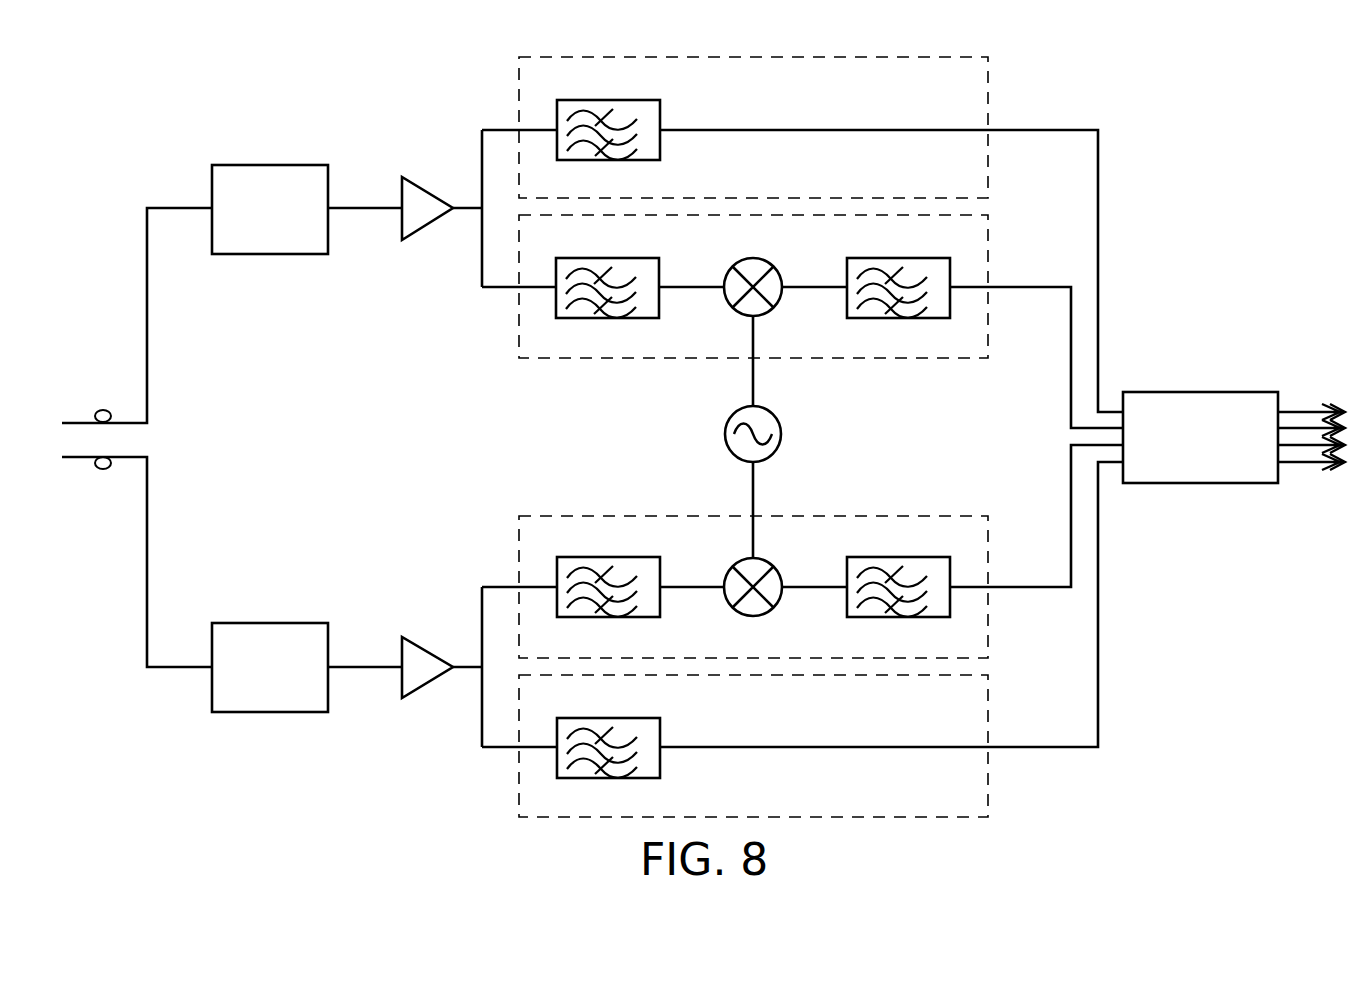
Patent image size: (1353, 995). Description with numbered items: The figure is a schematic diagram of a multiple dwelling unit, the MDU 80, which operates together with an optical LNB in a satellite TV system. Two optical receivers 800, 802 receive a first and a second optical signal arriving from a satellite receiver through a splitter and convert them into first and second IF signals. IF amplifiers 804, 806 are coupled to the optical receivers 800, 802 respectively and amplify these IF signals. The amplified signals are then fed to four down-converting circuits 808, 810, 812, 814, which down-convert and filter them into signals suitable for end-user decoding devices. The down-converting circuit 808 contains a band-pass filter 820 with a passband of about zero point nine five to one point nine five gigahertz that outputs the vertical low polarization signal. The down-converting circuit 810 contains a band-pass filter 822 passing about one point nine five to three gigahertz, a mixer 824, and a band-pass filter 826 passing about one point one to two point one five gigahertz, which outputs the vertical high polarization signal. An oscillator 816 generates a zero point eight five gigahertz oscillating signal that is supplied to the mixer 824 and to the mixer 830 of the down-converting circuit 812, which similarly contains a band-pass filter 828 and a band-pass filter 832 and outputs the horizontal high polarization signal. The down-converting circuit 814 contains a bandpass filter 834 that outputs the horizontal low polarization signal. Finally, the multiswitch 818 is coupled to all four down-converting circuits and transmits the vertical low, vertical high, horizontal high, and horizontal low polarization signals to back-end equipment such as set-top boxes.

The MDU 80 is at (1160, 99).
The optical receiver 800 is at (272, 165).
The optical receiver 802 is at (272, 623).
The IF amplifier 804 is at (430, 192).
The IF amplifier 806 is at (430, 651).
The down-converting circuit 808 is at (519, 94).
The down-converting circuit 810 is at (519, 322).
The down-converting circuit 812 is at (519, 553).
The down-converting circuit 814 is at (519, 777).
The oscillator 816 is at (725, 434).
The multiswitch 818 is at (1202, 392).
The band-pass filter 820 is at (628, 100).
The band-pass filter 822 is at (629, 258).
The mixer 824 is at (755, 258).
The band-pass filter 826 is at (920, 258).
The band-pass filter 828 is at (630, 557).
The mixer 830 is at (755, 558).
The band-pass filter 832 is at (920, 557).
The bandpass filter 834 is at (630, 718).